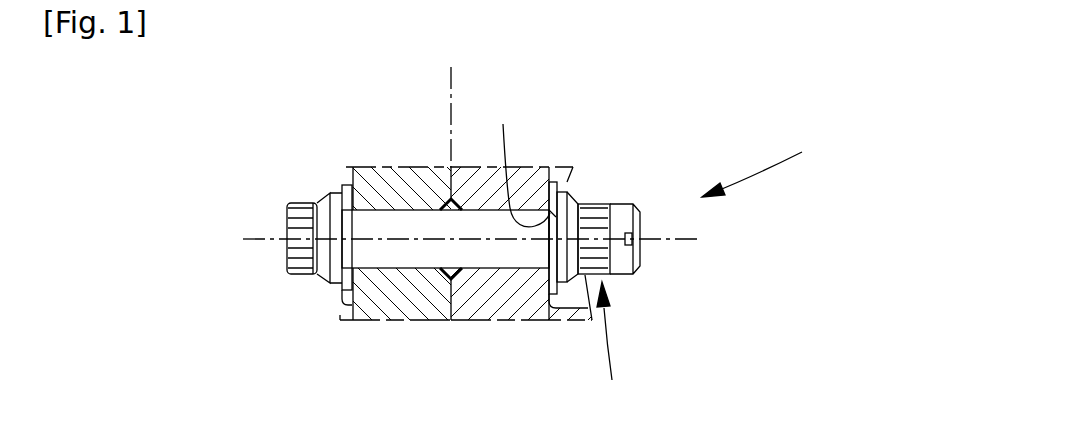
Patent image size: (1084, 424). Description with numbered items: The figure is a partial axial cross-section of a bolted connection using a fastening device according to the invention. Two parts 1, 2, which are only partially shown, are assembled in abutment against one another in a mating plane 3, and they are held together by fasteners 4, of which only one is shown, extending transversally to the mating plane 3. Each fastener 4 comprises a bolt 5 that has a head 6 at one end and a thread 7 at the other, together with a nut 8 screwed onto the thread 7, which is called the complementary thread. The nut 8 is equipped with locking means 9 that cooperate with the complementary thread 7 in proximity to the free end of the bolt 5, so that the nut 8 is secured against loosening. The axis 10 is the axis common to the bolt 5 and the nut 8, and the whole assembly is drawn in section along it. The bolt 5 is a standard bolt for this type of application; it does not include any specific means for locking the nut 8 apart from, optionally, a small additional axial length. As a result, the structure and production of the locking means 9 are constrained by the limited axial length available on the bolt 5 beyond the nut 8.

The part 1 is at (379, 292).
The part 2 is at (497, 297).
The mating plane 3 is at (450, 108).
The fastener 4 is at (762, 165).
The bolt 5 is at (417, 257).
The head 6 is at (300, 266).
The thread 7 is at (521, 161).
The nut 8 is at (587, 296).
The locking means 9 is at (628, 265).
The axis 10 is at (683, 242).